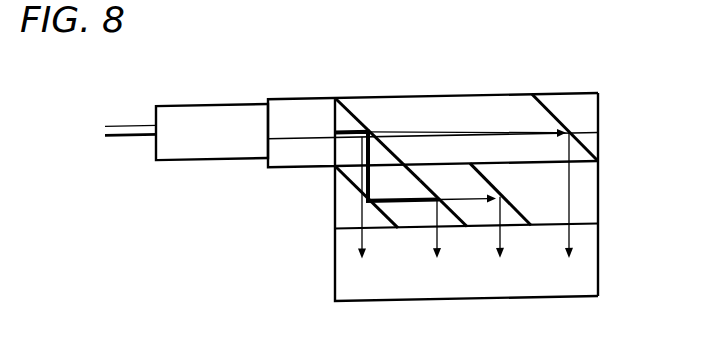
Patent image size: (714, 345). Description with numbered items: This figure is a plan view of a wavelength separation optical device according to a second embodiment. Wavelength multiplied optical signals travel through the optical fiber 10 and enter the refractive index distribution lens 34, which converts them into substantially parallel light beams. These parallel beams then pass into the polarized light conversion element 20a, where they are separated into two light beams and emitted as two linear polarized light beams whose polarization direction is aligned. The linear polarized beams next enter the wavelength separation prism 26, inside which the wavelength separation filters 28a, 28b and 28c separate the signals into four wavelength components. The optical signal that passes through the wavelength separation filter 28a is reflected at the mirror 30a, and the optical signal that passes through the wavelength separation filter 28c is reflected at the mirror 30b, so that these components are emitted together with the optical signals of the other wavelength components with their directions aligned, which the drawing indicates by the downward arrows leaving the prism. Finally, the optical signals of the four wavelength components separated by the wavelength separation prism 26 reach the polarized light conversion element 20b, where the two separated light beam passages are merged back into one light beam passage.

The optical fiber 10 is at (127, 124).
The refractive index distribution lens 34 is at (217, 122).
The polarized light conversion element 20a is at (312, 113).
The polarized light conversion element 20b is at (443, 283).
The wavelength separation prism 26 is at (598, 146).
The wavelength separation filter 28a is at (355, 108).
The wavelength separation filter 28b is at (344, 179).
The wavelength separation filter 28c is at (421, 186).
The mirror 30a is at (553, 128).
The mirror 30b is at (495, 163).